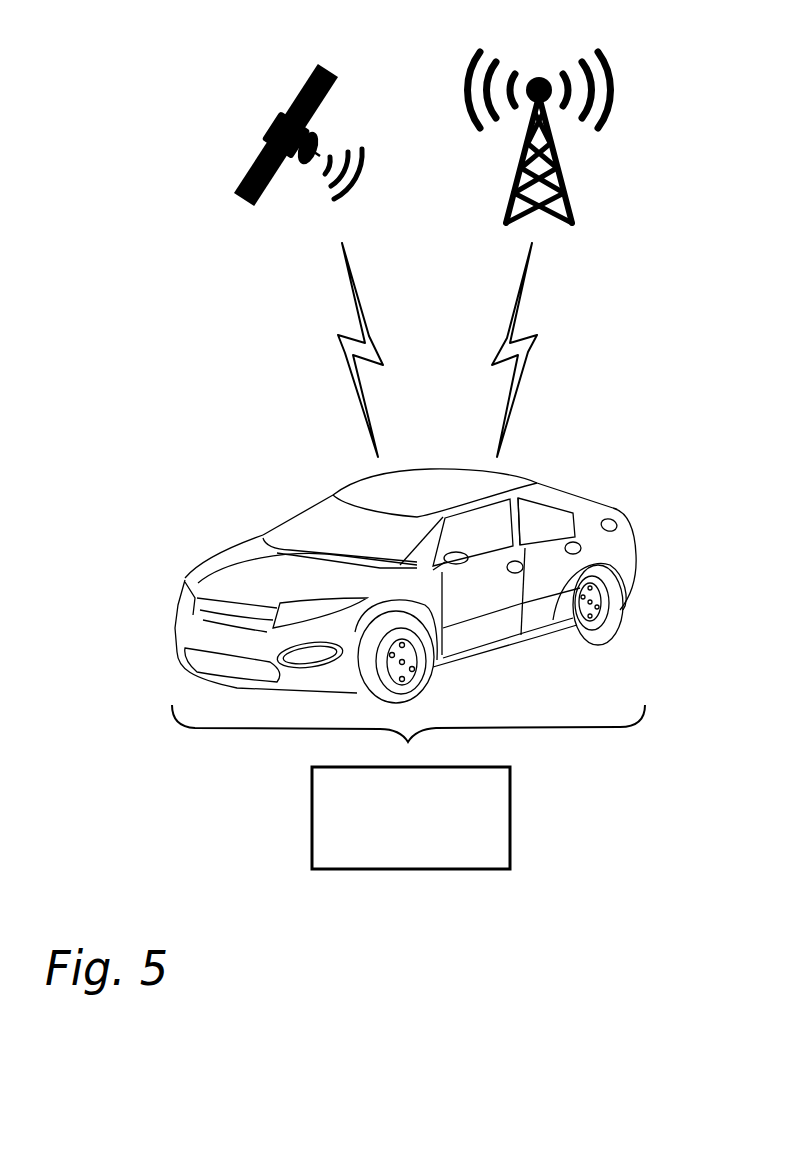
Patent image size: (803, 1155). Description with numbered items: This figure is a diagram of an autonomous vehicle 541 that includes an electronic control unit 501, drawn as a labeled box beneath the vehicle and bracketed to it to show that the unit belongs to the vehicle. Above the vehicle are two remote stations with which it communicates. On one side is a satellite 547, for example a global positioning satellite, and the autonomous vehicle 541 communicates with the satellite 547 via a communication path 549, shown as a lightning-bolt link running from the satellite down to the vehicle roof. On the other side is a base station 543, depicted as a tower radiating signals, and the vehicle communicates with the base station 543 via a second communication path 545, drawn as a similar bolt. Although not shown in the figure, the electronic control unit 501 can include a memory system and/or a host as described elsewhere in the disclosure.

The satellite 547 is at (253, 43).
The base station 543 is at (618, 43).
The communication path 549 is at (342, 347).
The communication path 545 is at (533, 347).
The autonomous vehicle 541 is at (193, 507).
The electronic control unit 501 is at (493, 857).